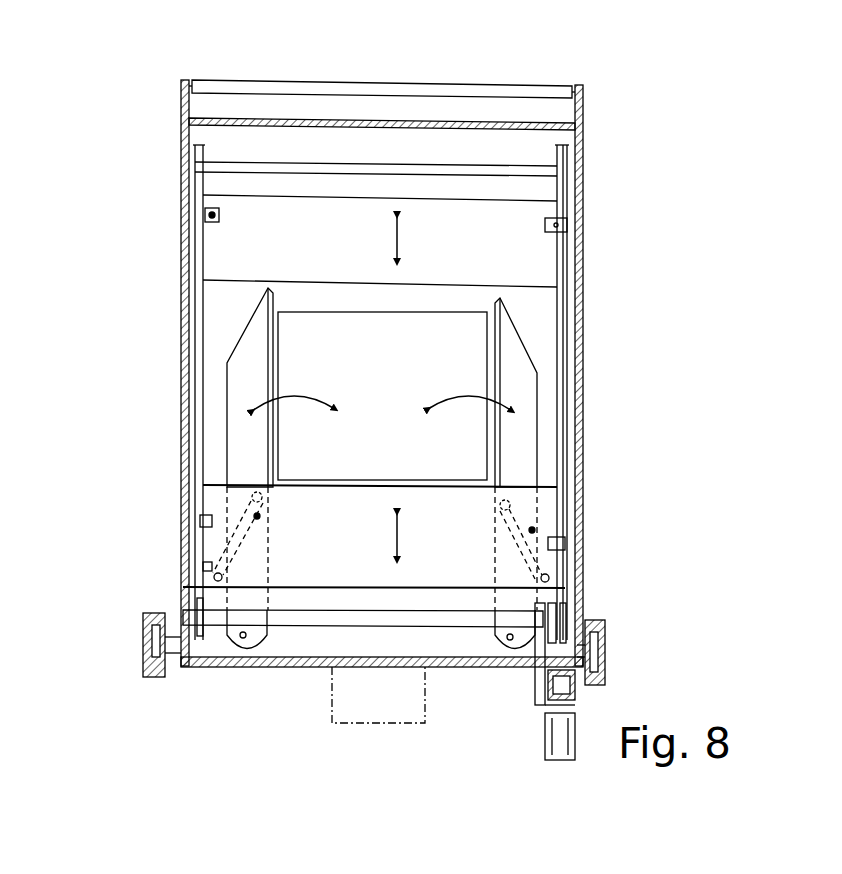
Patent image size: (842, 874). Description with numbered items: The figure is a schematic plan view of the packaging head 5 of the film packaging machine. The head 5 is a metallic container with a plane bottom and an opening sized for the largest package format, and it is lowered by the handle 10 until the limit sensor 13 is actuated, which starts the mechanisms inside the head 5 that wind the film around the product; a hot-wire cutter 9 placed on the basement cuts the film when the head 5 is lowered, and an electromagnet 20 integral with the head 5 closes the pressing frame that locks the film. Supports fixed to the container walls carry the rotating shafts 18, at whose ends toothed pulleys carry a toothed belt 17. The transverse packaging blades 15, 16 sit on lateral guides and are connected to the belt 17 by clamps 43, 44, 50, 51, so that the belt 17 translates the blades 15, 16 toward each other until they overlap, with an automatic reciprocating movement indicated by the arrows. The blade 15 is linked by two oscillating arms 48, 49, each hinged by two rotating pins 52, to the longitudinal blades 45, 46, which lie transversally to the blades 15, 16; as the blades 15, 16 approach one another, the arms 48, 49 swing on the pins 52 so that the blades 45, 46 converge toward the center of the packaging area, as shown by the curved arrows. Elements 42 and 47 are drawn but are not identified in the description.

The packaging head 5 is at (482, 128).
The hot-wire cutter 9 is at (577, 690).
The handle 10 is at (396, 93).
The limit sensor 13 is at (228, 617).
The packaging blade 15 is at (445, 530).
The packaging blade 16 is at (497, 218).
The toothed belt 17 is at (207, 567).
The rotating shafts 18 is at (355, 172).
The electromagnet 20 is at (395, 697).
The bearing 42 is at (208, 617).
The clamp 43 is at (207, 522).
The clamp 44 is at (207, 215).
The packaging blade 45 is at (536, 437).
The packaging blade 46 is at (250, 435).
The right cylinder 47 is at (525, 638).
The oscillating arm 48 is at (532, 530).
The oscillating arm 49 is at (257, 516).
The clamp 50 is at (573, 226).
The clamp 51 is at (570, 541).
The rotating pins 52 is at (210, 298).